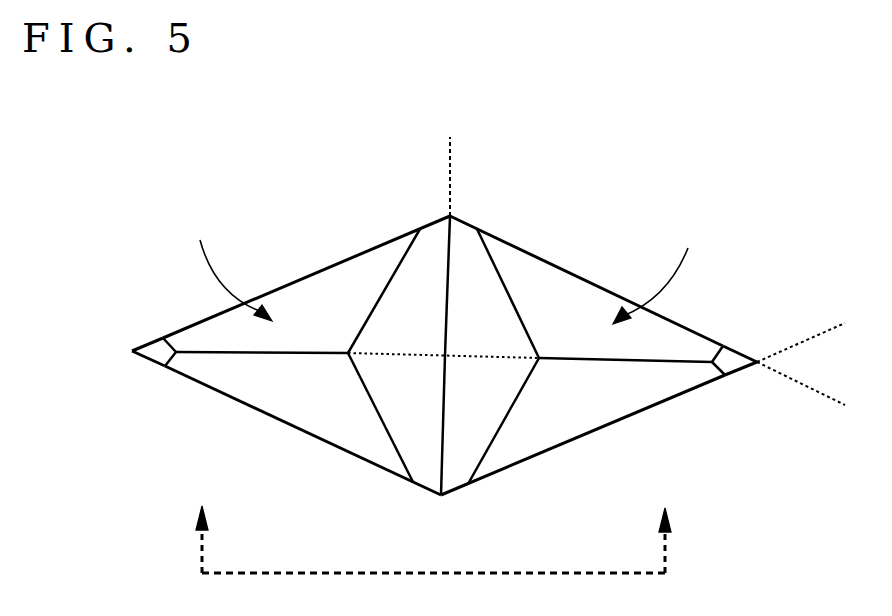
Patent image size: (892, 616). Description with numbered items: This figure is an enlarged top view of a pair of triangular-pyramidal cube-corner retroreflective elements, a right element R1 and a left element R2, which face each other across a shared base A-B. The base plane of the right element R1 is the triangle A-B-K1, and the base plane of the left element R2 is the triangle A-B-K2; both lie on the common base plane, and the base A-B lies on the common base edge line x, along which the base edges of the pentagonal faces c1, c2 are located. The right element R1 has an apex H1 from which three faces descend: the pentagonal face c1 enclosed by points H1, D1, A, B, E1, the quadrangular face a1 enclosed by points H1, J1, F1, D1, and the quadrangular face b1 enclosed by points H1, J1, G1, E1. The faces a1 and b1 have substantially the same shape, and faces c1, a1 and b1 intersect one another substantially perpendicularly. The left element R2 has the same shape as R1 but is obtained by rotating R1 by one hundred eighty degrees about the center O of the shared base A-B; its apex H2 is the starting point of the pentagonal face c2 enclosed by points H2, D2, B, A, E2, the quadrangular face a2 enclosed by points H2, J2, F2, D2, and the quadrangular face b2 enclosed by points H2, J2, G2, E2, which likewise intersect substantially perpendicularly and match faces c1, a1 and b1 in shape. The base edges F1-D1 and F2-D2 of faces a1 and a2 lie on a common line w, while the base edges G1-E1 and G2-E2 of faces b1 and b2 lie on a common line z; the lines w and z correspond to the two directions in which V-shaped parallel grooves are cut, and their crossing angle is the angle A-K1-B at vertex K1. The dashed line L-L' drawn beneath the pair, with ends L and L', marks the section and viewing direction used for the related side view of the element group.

The end point of shared base edge A is at (454, 276).
The end point of shared base edge B is at (443, 438).
The base plane vertex of right element K1 is at (758, 360).
The base plane vertex of left element K2 is at (132, 352).
The vertex of face c2 and b2 E2 is at (306, 276).
The vertex of face c1 and a1 D1 is at (586, 281).
The vertex of face c2 and a2 D2 is at (303, 434).
The vertex of face c1 and b1 E1 is at (583, 441).
The vertex of face b2 G2 is at (160, 334).
The vertex of face a2 F2 is at (159, 375).
The vertex shared by faces a2 and b2 J2 is at (262, 363).
The vertex of face a1 F1 is at (724, 344).
The vertex of face b1 G1 is at (723, 380).
The vertex shared by faces a1 and b1 J1 is at (625, 352).
The apex of right reflective element H1 is at (514, 356).
The apex of left reflective element H2 is at (370, 355).
The center of shared base O is at (443, 367).
The common base edge line x is at (449, 168).
The common line w is at (814, 334).
The common line z is at (809, 394).
The right triangular-pyramidal reflective element R1 is at (655, 274).
The left triangular-pyramidal reflective element R2 is at (229, 267).
The section line end L is at (430, 527).
The section line end L' is at (665, 529).
The quadrangular lateral face a1 is at (564, 313).
The quadrangular lateral face a2 is at (289, 406).
The quadrangular lateral face b1 is at (565, 408).
The quadrangular lateral face b2 is at (295, 306).
The pentagonal lateral face c1 is at (477, 328).
The pentagonal lateral face c2 is at (394, 391).